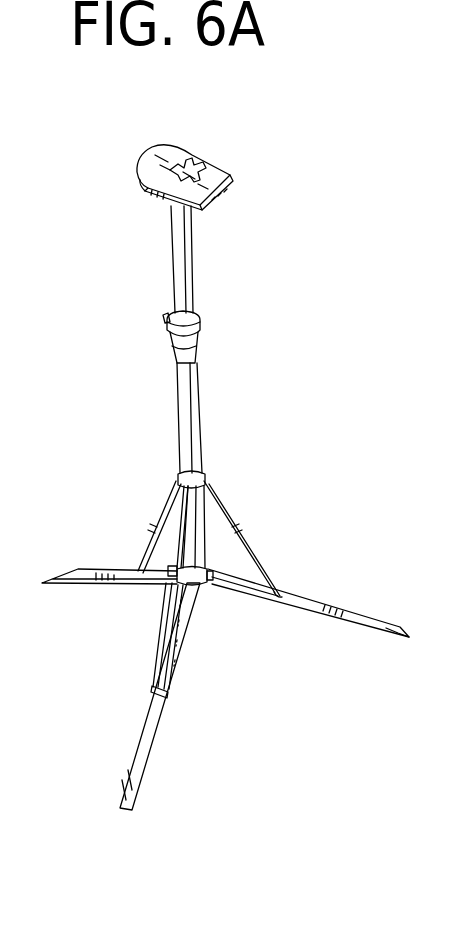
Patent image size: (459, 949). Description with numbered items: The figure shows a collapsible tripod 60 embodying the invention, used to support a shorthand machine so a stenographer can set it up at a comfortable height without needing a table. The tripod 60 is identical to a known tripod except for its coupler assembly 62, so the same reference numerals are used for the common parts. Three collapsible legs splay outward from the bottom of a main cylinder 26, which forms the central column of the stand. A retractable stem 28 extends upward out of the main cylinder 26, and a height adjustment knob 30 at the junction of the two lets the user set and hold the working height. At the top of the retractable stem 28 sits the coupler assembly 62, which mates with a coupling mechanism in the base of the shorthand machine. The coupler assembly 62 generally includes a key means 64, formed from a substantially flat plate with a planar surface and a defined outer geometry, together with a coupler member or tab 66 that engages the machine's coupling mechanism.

The main cylinder 26 is at (189, 399).
The retractable stem 28 is at (186, 262).
The height adjustment knob 30 is at (164, 318).
The tripod 60 is at (128, 388).
The coupler assembly 62 is at (108, 171).
The key means 64 is at (157, 146).
The coupler member or tab 66 is at (187, 164).